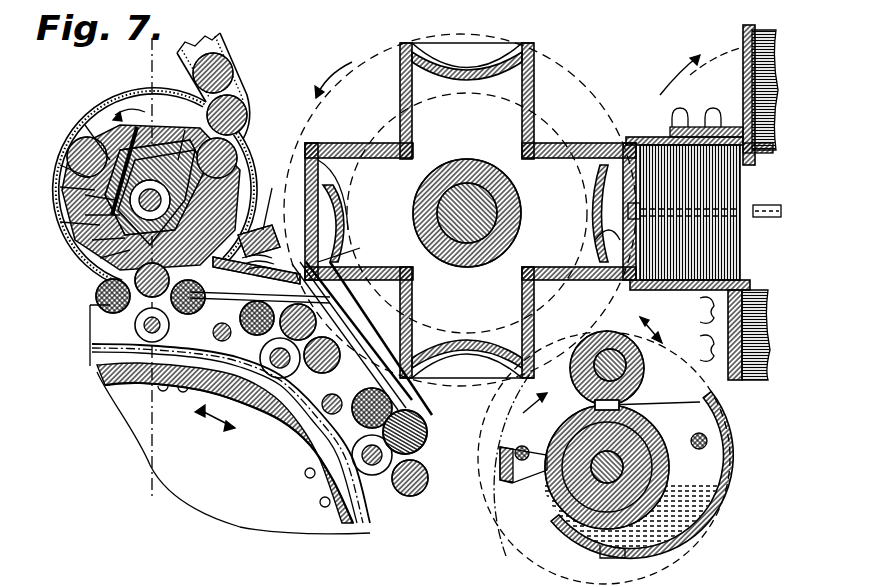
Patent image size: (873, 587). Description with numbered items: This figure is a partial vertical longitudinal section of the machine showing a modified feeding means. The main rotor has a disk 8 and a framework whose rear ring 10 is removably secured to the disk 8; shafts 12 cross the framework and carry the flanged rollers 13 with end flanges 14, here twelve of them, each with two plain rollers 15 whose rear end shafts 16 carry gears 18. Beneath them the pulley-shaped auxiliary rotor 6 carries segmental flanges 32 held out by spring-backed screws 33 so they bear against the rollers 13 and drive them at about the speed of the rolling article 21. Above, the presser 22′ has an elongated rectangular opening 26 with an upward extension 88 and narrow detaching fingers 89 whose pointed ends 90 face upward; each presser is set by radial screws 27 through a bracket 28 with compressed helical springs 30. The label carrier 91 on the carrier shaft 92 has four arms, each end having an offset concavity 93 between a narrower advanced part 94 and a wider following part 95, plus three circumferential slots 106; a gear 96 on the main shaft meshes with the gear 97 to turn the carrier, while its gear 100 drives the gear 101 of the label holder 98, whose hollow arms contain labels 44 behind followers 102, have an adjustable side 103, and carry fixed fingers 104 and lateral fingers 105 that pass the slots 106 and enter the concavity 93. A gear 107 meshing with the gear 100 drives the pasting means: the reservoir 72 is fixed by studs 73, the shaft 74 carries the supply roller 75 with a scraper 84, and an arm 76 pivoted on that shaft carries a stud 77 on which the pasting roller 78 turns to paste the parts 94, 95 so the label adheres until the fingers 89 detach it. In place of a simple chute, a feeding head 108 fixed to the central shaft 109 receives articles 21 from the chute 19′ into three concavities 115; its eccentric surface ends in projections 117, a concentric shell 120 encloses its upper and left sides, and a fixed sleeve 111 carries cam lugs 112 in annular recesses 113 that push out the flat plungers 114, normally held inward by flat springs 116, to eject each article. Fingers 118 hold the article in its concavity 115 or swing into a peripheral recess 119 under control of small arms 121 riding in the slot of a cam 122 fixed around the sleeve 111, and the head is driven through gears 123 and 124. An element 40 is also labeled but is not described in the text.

The disk 8 is at (152, 267).
The chute 19′ is at (222, 50).
The articles 21 is at (232, 80).
The feeding head 108 is at (112, 145).
The flat springs 116 is at (138, 125).
The central shaft 109 is at (152, 178).
The projection 117 is at (85, 125).
The shell 120 is at (78, 128).
The annular recesses 113 is at (188, 136).
The fingers 118 is at (58, 166).
The small arm 121 is at (60, 185).
The plungers 114 is at (83, 195).
The sleeve 111 is at (87, 214).
The peripheral recess 119 is at (63, 221).
The cam lugs 112 is at (92, 239).
The concavities 115 is at (99, 257).
The gears 18 is at (96, 292).
The rear end shafts 16 is at (96, 298).
The plain rollers 15 is at (100, 310).
The flanged rollers 13 is at (135, 327).
The shafts 12 is at (375, 492).
The rod 40 is at (206, 313).
The presser 22′ is at (428, 436).
The gear 123 is at (425, 495).
The rear ring 10 is at (88, 346).
The flanges 14 is at (225, 443).
The auxiliary rotor 6 is at (347, 524).
The screws 33 is at (163, 392).
The segmental flanges 32 is at (312, 534).
The radial screws 27 is at (259, 223).
The helical springs 30 is at (259, 237).
The bracket 28 is at (275, 198).
The cam 122 is at (240, 200).
The gear 124 is at (285, 157).
The carrier shaft 92 is at (440, 210).
The gear 100 is at (575, 75).
The advanced part 94 is at (405, 45).
The following part 95 is at (530, 46).
The concavity 93 is at (470, 55).
The circumferential slots 106 is at (600, 305).
The label carrier 91 is at (402, 95).
The gear 97 is at (395, 142).
The upward extension 88 is at (320, 211).
The pointed ends 90 is at (342, 225).
The detaching fingers 89 is at (351, 249).
The rectangular opening 26 is at (413, 320).
The gear 96 is at (455, 362).
The lateral fingers 105 is at (608, 211).
The labels 44 is at (771, 334).
The adjustable side 103 is at (668, 130).
The fixed fingers 104 is at (750, 32).
The followers 102 is at (752, 178).
The gear 101 is at (703, 104).
The label holder 98 is at (735, 60).
The paste reservoir 72 is at (735, 468).
The gear 107 is at (715, 520).
The shaft 74 is at (625, 458).
The supply roller 75 is at (640, 408).
The pasting roller 78 is at (575, 366).
The stud 77 is at (640, 362).
The scraper 84 is at (530, 505).
The studs 73 is at (524, 447).
The arm 76 is at (615, 558).